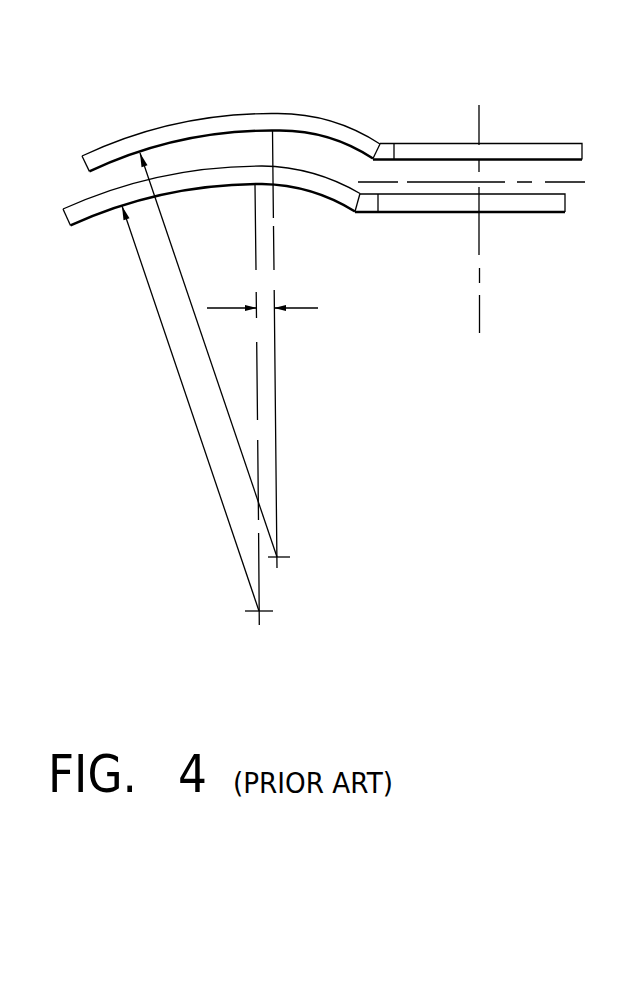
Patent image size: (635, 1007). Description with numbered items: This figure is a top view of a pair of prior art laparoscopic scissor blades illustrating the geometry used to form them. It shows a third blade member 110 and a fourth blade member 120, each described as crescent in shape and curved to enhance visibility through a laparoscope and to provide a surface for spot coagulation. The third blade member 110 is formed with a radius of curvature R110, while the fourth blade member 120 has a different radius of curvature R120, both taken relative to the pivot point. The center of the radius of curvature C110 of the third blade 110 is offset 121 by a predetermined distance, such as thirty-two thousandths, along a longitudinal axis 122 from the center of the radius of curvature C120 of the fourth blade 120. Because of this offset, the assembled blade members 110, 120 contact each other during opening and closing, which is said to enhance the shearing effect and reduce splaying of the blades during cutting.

The third blade member 110 is at (427, 214).
The fourth blade member 120 is at (197, 120).
The offset 121 is at (305, 310).
The longitudinal axis 122 is at (415, 181).
The radius of curvature R120 is at (228, 211).
The radius of curvature R110 is at (180, 378).
The center of the radius of curvature C120 is at (286, 556).
The center of the radius of curvature C110 is at (265, 607).